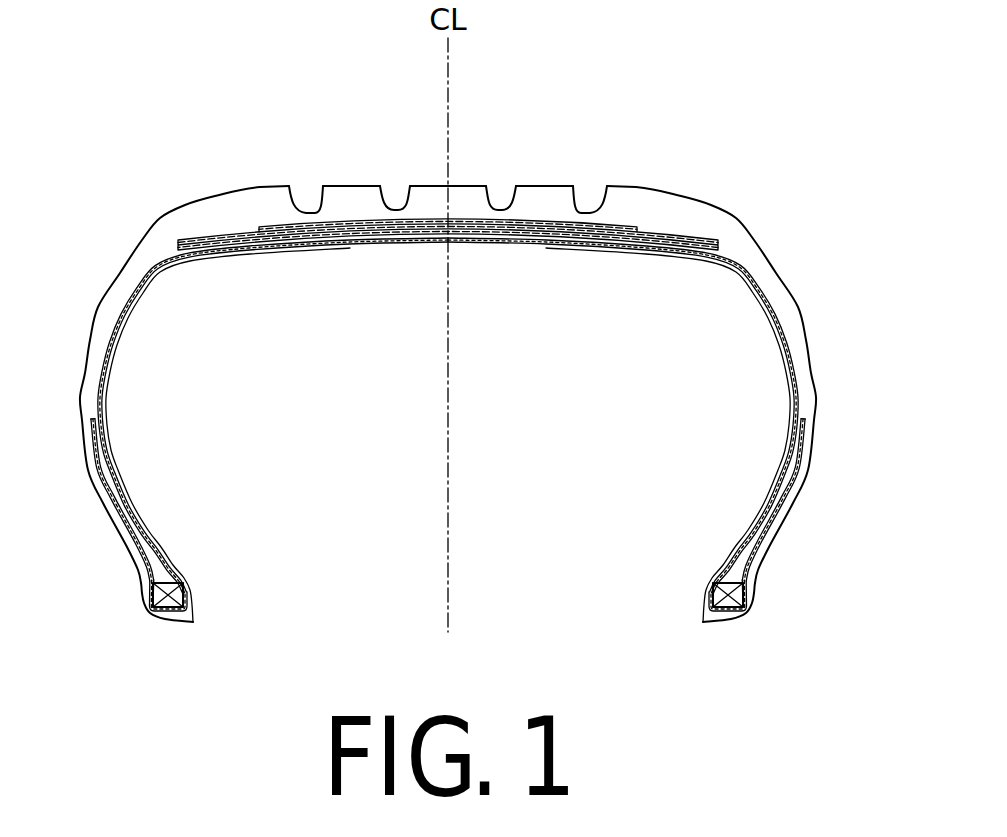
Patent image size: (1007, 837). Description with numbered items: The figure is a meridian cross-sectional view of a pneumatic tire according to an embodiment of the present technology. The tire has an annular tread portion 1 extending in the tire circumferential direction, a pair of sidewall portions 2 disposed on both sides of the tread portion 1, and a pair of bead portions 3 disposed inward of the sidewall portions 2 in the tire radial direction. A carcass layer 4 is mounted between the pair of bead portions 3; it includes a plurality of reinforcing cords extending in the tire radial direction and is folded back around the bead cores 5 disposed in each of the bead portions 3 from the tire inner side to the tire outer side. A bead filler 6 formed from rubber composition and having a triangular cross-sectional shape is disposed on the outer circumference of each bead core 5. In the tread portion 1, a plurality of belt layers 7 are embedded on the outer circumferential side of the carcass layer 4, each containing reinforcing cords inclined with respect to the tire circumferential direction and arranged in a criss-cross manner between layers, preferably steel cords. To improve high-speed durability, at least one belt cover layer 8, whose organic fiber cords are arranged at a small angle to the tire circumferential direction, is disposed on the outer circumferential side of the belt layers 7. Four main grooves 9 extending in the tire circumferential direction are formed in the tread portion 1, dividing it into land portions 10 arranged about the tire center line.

The tread portion 1 is at (471, 173).
The sidewall portion 2 is at (83, 342).
The bead portion 3 is at (131, 598).
The carcass layer 4 is at (130, 293).
The bead core 5 is at (188, 590).
The bead filler 6 is at (160, 560).
The belt layer 7 is at (597, 244).
The belt cover layer 8 is at (255, 226).
The main groove 9 is at (317, 190).
The land portion 10 is at (270, 188).